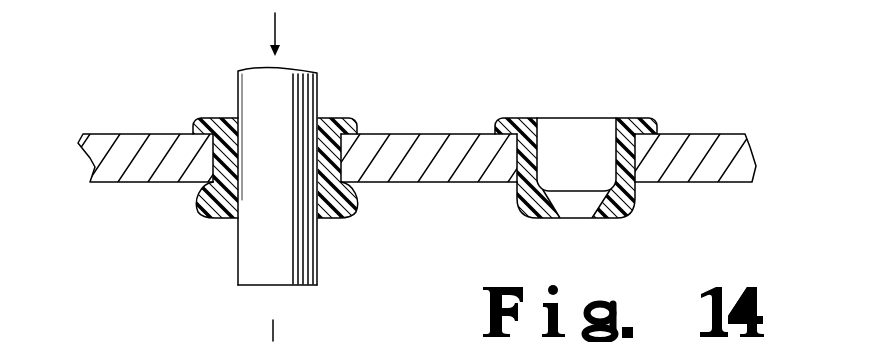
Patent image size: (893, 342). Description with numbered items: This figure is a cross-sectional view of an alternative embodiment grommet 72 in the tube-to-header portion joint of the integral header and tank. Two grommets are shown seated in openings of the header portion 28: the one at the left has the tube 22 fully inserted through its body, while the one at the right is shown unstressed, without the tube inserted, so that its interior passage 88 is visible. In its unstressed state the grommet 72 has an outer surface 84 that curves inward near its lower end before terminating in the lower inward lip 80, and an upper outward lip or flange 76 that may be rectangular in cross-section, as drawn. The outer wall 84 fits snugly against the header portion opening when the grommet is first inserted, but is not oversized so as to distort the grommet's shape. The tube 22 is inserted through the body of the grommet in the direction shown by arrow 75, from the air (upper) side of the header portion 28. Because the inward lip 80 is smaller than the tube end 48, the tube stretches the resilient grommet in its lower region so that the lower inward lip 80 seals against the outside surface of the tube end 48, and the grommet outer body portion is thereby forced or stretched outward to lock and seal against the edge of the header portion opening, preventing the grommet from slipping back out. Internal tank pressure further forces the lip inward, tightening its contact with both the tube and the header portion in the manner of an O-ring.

The tube 22 is at (272, 88).
The header portion 28 is at (127, 143).
The tube end 48 is at (273, 286).
The grommet 72 is at (384, 144).
The arrow 75 is at (271, 27).
The upper outward lip or flange 76 is at (222, 118).
The inward lip 80 is at (203, 216).
The outer surface 84 is at (210, 158).
The bore 88 is at (236, 157).